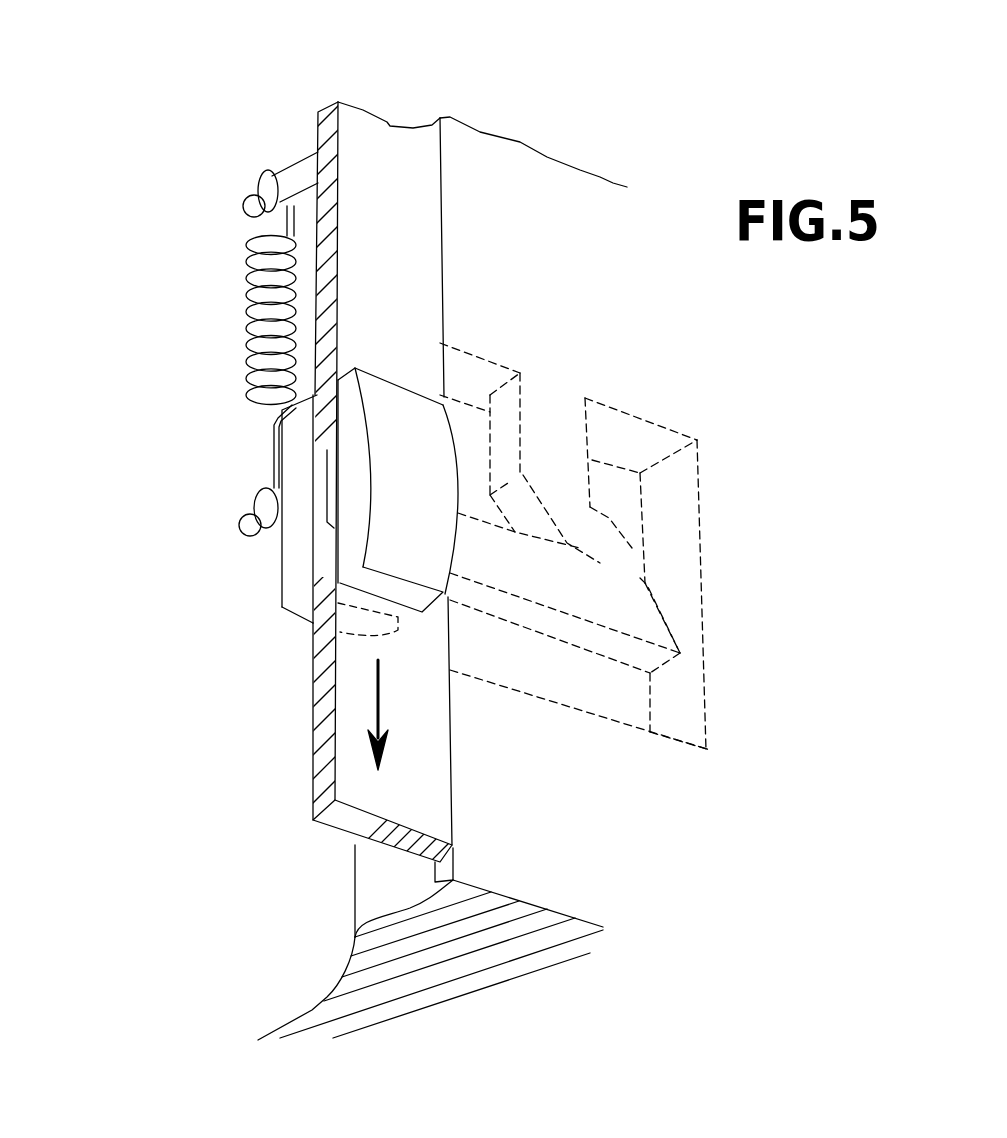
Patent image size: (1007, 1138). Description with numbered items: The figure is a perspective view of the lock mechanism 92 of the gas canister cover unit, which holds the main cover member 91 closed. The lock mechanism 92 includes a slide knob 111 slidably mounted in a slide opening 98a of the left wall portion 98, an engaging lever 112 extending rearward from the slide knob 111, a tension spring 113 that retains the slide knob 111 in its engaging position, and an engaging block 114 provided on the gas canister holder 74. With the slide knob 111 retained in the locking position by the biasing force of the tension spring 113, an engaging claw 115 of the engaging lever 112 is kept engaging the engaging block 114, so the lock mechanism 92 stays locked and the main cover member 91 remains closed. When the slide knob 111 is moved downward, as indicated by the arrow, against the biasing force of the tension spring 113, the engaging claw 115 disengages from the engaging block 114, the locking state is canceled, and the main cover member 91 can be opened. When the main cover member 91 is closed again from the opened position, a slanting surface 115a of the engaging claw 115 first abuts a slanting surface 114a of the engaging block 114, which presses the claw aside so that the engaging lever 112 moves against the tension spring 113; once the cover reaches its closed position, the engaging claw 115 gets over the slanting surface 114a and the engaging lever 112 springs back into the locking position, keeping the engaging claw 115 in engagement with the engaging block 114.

The gas canister holder 74 is at (570, 205).
The main cover member 91 is at (392, 123).
The lock mechanism 92 is at (177, 448).
The left wall portion 98 is at (410, 252).
The slide opening 98a is at (327, 580).
The slide knob 111 is at (413, 417).
The engaging lever 112 is at (556, 598).
The tension spring 113 is at (242, 296).
The engaging block 114 is at (580, 470).
The slanting surface 114a is at (530, 560).
The engaging claw 115 is at (650, 613).
The slanting surface 115a is at (647, 585).